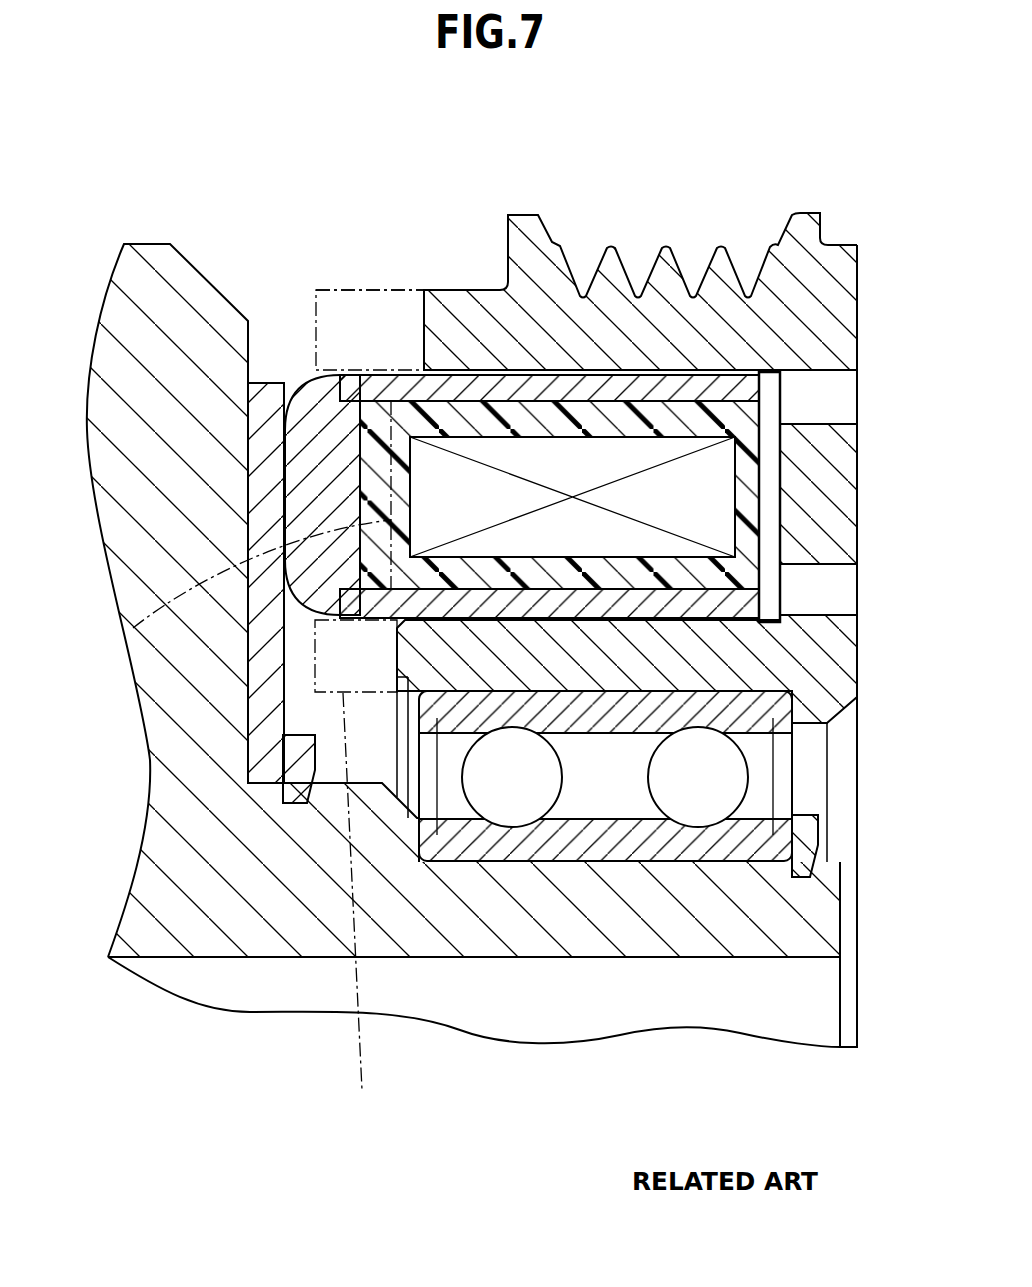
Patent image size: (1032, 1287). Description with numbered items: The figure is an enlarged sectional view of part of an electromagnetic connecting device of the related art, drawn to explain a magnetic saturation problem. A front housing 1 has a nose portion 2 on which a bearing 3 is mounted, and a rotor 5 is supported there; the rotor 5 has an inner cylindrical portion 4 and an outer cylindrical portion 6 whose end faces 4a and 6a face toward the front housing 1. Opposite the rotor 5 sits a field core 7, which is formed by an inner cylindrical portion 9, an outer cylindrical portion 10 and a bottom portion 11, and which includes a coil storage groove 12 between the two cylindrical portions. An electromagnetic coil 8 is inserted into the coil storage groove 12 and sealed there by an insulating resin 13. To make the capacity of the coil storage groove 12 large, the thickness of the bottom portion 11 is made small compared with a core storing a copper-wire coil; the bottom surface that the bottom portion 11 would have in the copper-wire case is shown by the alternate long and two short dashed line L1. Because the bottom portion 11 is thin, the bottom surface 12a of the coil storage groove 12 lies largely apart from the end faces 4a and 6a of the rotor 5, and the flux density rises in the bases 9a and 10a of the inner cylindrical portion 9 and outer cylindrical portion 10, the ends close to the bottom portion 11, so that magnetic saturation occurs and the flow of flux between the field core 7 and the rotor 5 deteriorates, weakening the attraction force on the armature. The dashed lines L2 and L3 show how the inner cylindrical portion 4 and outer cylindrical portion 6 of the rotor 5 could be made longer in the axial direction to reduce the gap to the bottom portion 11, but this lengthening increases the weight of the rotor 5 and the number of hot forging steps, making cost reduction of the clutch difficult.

The front housing 1 is at (140, 243).
The nose portion 2 is at (762, 925).
The bearing 3 is at (557, 850).
The inner cylindrical portion 4 is at (700, 655).
The end face 4a is at (397, 660).
The rotor 5 is at (800, 212).
The outer cylindrical portion 6 is at (457, 303).
The end face 6a is at (424, 335).
The field core 7 is at (280, 394).
The electromagnetic coil 8 is at (712, 494).
The inner cylindrical portion 9 is at (620, 603).
The base 9a is at (368, 604).
The outer cylindrical portion 10 is at (575, 390).
The base 10a is at (377, 390).
The bottom portion 11 is at (310, 477).
The coil storage groove 12 is at (734, 415).
The bottom surface 12a is at (377, 493).
The insulating resin 13 is at (752, 470).
The alternate long and two short dashed line L1 is at (133, 628).
The alternate long and two short dashed line L2 is at (362, 908).
The alternate long and two short dashed line L3 is at (366, 290).